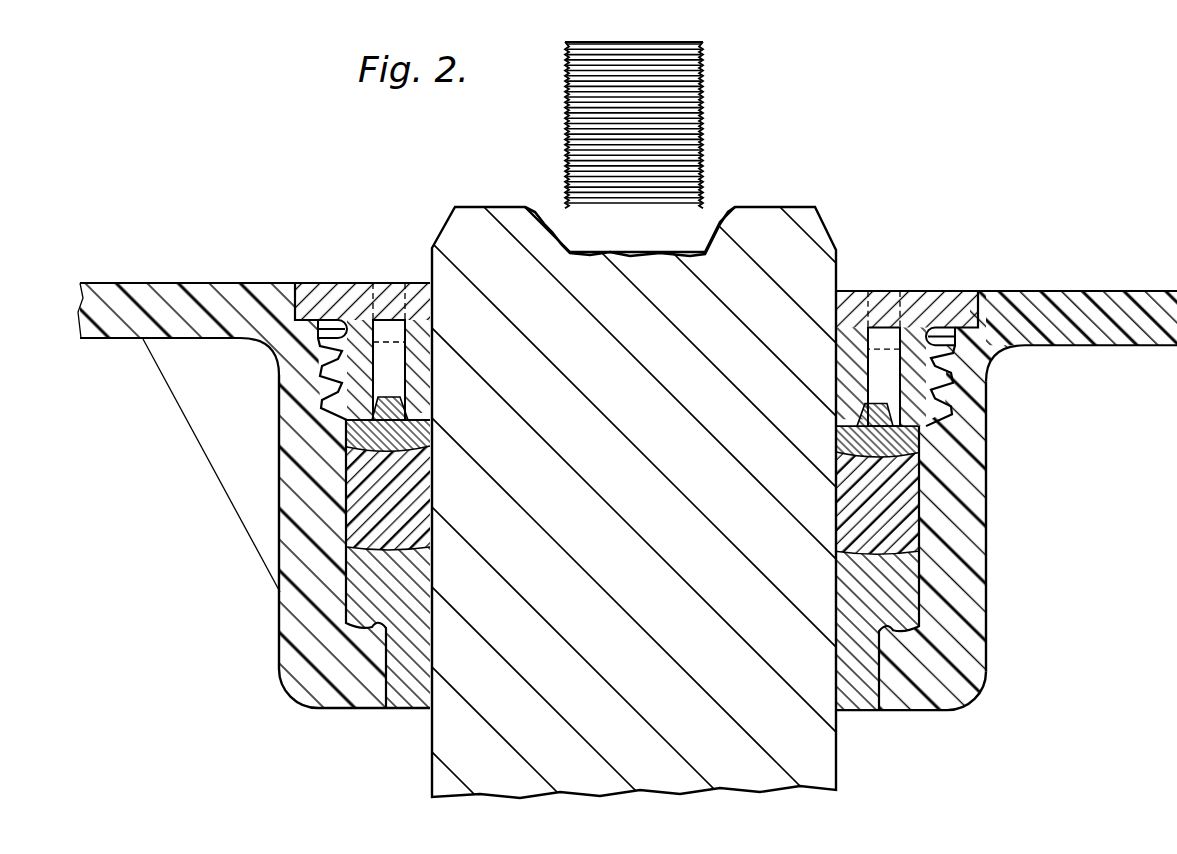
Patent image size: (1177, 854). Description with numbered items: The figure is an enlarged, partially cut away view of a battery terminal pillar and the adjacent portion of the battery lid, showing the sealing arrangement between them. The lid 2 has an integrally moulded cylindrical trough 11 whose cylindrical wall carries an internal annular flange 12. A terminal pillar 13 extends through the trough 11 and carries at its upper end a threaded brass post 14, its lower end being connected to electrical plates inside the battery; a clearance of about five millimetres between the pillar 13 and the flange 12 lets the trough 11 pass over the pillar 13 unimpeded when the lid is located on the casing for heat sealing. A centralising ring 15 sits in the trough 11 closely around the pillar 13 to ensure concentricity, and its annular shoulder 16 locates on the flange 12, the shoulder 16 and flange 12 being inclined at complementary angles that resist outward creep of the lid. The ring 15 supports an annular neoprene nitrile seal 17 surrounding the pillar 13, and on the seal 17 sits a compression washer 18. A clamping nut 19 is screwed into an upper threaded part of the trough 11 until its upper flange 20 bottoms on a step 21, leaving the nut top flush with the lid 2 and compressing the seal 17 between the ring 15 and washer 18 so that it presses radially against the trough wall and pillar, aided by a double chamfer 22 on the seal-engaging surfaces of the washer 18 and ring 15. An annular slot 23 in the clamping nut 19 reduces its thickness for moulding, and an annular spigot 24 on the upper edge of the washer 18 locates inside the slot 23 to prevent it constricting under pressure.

The lid 2 is at (222, 284).
The cylindrical trough 11 is at (285, 585).
The annular flange 12 is at (377, 645).
The terminal pillar 13 is at (812, 753).
The threaded brass post 14 is at (705, 131).
The ring 15 is at (990, 648).
The annular shoulder 16 is at (980, 681).
The annular neoprene nitrile seal 17 is at (903, 620).
The compression washer 18 is at (1133, 348).
The clamping nut 19 is at (928, 291).
The upper flange 20 is at (296, 320).
The step 21 is at (293, 342).
The double chamfer 22 is at (897, 550).
The annular slot 23 is at (880, 370).
The annular spigot 24 is at (873, 455).